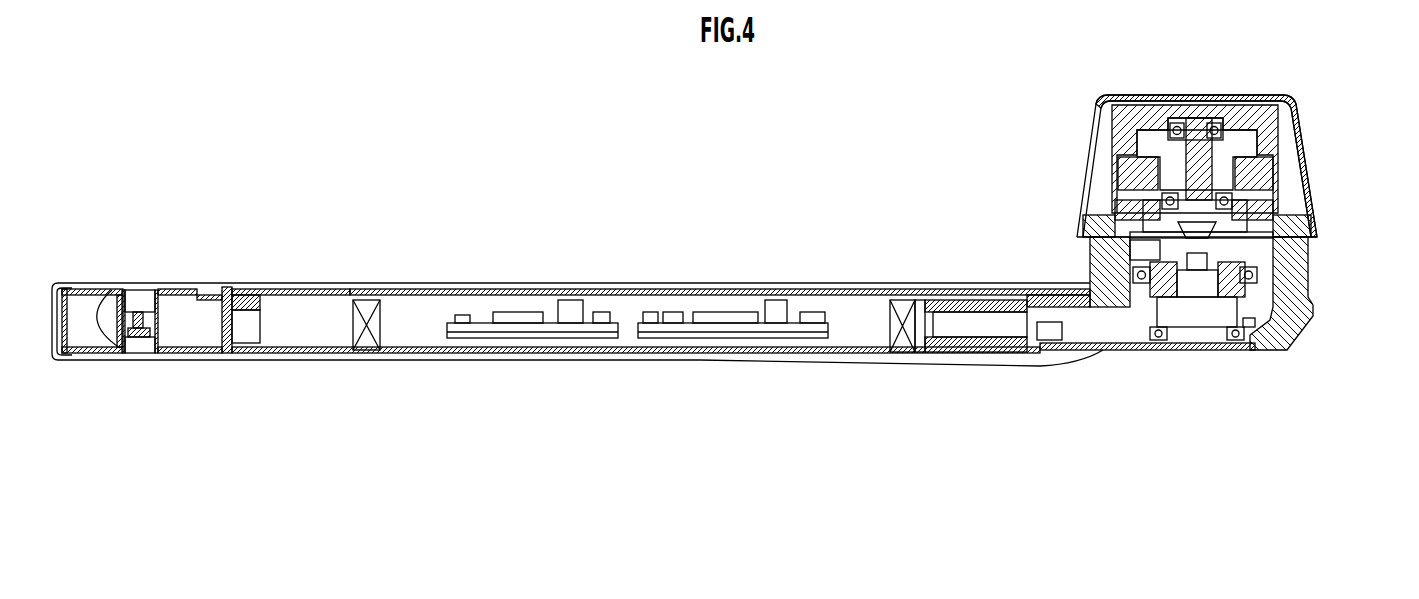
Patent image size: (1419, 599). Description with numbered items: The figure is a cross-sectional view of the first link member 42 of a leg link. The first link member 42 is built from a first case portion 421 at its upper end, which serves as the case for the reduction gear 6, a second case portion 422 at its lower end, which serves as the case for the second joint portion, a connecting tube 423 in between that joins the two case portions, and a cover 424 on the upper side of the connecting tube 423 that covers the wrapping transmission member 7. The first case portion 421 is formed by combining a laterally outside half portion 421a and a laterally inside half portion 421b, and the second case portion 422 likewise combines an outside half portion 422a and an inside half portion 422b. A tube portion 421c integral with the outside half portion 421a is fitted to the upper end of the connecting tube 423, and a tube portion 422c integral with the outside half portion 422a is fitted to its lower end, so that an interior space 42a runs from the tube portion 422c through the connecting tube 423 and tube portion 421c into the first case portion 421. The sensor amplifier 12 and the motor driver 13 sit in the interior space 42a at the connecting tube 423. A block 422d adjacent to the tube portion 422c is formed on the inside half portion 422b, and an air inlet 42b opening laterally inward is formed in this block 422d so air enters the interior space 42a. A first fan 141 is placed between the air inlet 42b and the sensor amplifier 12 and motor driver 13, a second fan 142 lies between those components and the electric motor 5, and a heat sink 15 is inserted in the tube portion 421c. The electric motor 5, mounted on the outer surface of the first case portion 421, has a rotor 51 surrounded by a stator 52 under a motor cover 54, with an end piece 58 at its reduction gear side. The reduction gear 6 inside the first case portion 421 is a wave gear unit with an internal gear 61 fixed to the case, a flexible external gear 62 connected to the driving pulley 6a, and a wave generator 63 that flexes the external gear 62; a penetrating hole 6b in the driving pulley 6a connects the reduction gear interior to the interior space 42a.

The first link member 42 is at (641, 256).
The second case portion 422 is at (186, 244).
The laterally outside half portion of the second case portion 422a is at (173, 290).
The laterally inside half portion of the second case portion 422b is at (98, 306).
The tube portion of the second case portion 422c is at (312, 289).
The block 422d is at (240, 289).
The interior space 42a is at (877, 335).
The air inlet 42b is at (243, 343).
The first fan 141 is at (367, 297).
The second fan 142 is at (905, 298).
The sensor amplifier 12 is at (540, 318).
The motor driver 13 is at (733, 318).
The connecting tube 423 is at (589, 290).
The cover 424 is at (470, 360).
The first case portion 421 is at (1224, 293).
The laterally outside half portion of the first case portion 421a is at (1310, 300).
The laterally inside half portion of the first case portion 421b is at (1300, 343).
The tube portion of the first case portion 421c is at (985, 298).
The heat sink 15 is at (1032, 332).
The electric motor 5 is at (1088, 83).
The rotor 51 is at (1213, 136).
The stator 52 is at (1274, 140).
The motor cover 54 is at (1175, 95).
The end piece 58 is at (1116, 204).
The internal gear 61 is at (1095, 226).
The external gear 62 is at (1125, 250).
The wave generator 63 is at (1130, 182).
The reduction gear 6 is at (1267, 212).
The driving pulley 6a is at (1240, 341).
The penetrating hole 6b is at (1207, 322).
The wrapping transmission member 7 is at (1255, 345).